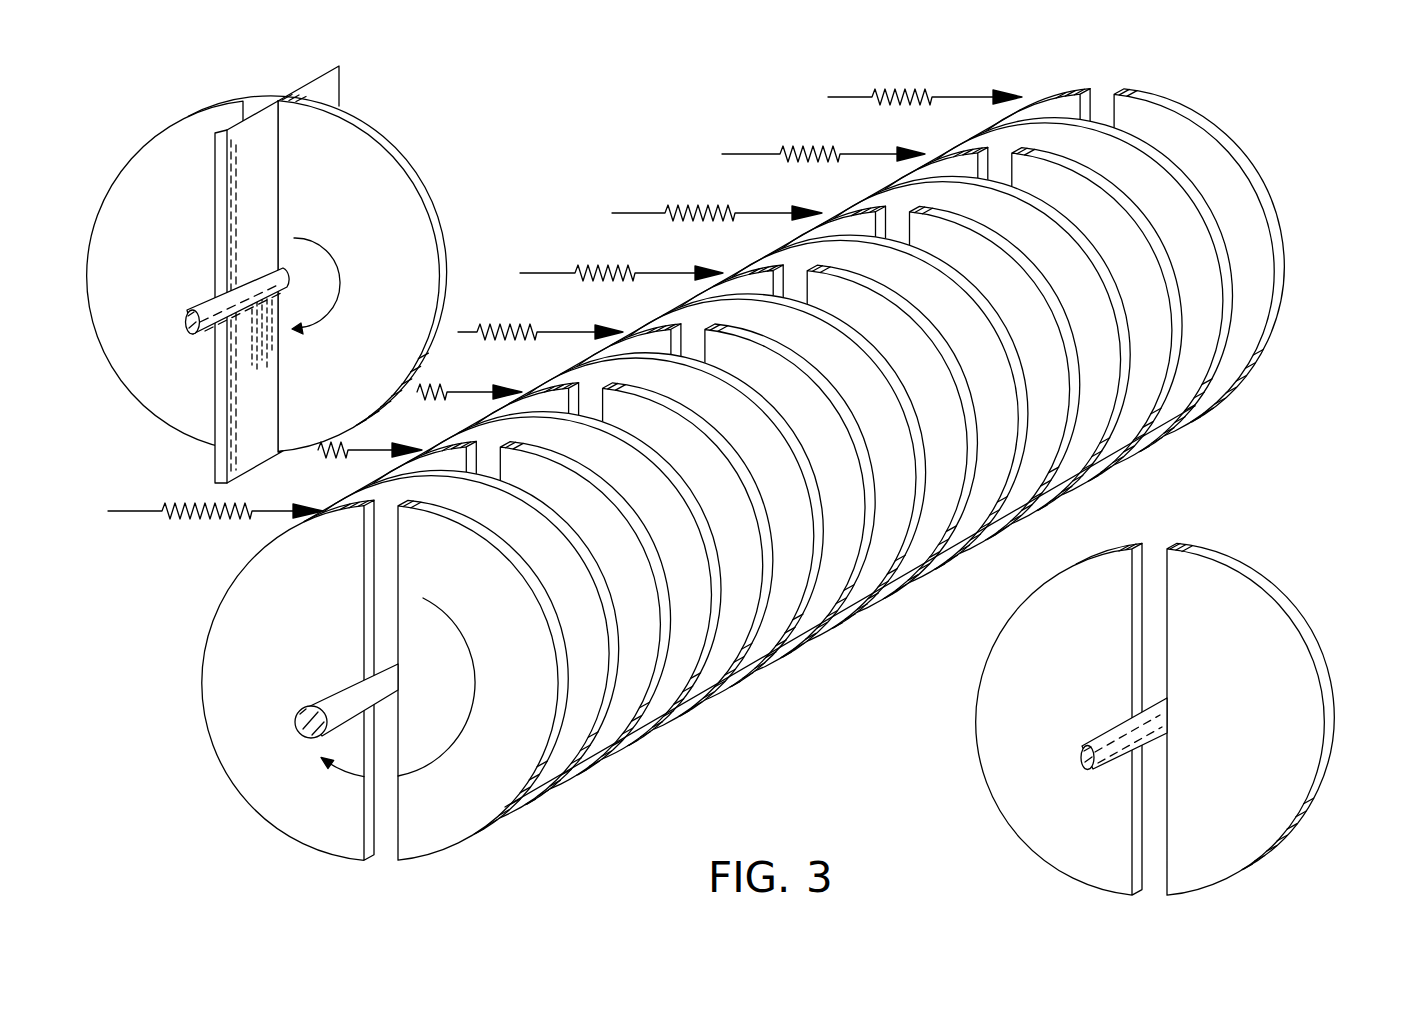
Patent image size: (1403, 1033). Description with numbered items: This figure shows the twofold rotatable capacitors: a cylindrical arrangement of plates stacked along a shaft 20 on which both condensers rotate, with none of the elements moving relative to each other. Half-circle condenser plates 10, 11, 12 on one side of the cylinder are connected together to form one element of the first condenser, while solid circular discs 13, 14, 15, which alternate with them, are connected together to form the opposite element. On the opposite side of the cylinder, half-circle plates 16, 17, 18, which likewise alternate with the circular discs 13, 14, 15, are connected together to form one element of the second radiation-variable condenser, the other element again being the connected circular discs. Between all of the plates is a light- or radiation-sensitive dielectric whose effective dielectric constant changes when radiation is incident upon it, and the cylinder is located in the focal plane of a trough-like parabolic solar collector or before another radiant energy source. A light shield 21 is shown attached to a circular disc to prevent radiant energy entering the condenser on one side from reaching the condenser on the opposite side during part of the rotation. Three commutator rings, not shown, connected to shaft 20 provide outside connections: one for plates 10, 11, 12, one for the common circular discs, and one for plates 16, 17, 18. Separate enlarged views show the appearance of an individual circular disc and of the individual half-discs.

The condenser plate 10 is at (463, 813).
The condenser plate 11 is at (625, 698).
The condenser plate 12 is at (733, 627).
The circular disc 13 is at (578, 725).
The circular disc 14 is at (675, 673).
The circular disc 15 is at (777, 612).
The half-disc plate 16 is at (272, 790).
The half-disc plate 17 is at (438, 467).
The half-disc plate 18 is at (543, 408).
The shaft 20 is at (295, 715).
The light shield 21 is at (325, 87).